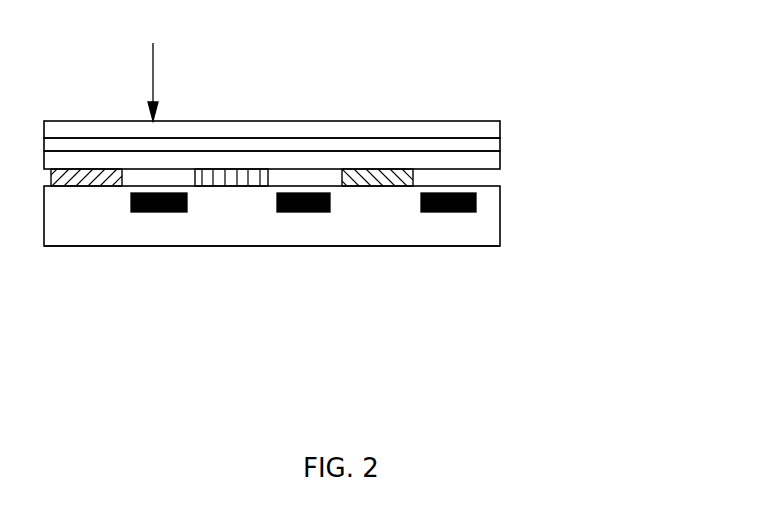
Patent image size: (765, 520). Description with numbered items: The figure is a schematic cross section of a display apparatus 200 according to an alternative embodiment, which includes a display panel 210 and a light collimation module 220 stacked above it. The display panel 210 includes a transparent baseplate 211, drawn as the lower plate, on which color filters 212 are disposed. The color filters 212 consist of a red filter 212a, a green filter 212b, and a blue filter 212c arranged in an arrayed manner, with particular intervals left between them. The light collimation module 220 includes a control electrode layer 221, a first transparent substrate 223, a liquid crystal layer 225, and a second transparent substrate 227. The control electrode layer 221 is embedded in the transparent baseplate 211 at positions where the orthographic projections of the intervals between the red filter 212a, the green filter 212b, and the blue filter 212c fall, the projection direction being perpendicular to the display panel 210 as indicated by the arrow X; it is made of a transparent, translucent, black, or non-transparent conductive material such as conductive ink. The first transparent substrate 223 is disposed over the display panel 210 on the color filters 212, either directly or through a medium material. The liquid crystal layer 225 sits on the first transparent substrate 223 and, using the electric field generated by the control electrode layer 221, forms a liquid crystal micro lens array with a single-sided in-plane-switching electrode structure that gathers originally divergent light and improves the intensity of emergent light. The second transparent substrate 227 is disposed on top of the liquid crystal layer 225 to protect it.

The display apparatus 200 is at (282, 33).
The display panel 210 is at (322, 357).
The transparent baseplate 211 is at (53, 246).
The color filters 212 is at (472, 302).
The red filter 212a is at (102, 187).
The green filter 212b is at (238, 187).
The blue filter 212c is at (387, 187).
The light collimation module 220 is at (617, 102).
The control electrode layer 221 is at (477, 201).
The first transparent substrate 223 is at (500, 169).
The liquid crystal layer 225 is at (500, 149).
The second transparent substrate 227 is at (500, 125).